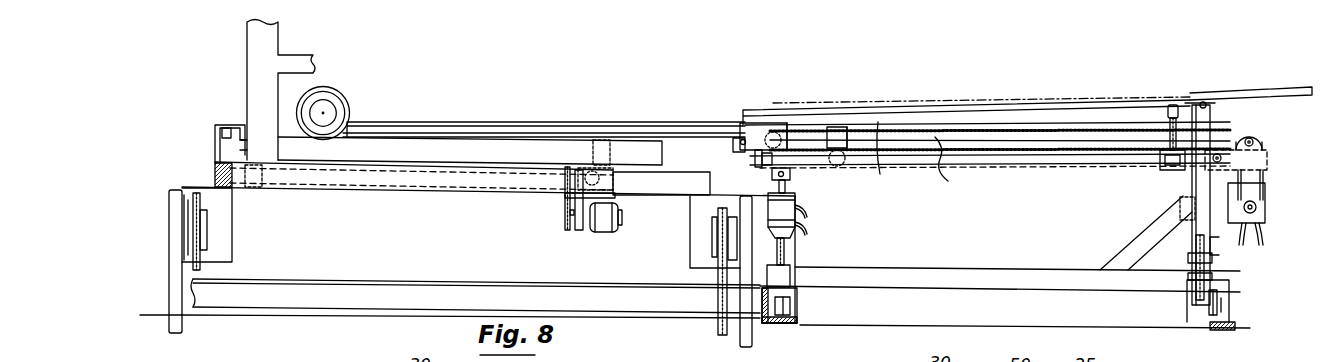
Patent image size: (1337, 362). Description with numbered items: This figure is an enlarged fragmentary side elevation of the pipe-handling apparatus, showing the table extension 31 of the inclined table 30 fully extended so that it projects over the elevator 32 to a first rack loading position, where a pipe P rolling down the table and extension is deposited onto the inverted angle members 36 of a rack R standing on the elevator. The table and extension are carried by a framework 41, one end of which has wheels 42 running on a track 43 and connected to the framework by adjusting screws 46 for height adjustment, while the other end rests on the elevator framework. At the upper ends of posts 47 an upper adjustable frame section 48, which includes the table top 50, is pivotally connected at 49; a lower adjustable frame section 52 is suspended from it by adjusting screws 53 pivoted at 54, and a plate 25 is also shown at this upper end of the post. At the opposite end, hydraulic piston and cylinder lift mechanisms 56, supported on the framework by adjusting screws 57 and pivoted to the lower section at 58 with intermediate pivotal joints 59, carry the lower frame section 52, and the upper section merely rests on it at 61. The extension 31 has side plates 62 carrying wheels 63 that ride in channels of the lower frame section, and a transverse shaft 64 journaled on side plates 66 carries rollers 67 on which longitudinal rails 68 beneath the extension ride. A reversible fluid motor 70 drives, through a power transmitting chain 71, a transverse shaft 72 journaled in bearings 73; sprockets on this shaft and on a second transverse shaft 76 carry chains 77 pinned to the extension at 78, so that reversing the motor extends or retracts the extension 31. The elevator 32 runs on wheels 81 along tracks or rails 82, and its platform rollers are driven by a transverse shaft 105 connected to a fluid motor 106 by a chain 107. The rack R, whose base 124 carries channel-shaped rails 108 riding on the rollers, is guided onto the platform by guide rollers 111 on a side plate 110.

The plate 25 is at (1267, 93).
The inclined table 30 is at (948, 101).
The table extension 31 is at (543, 123).
The elevator 32 is at (200, 178).
The inverted angle members 36 is at (295, 125).
The framework 41 is at (1017, 268).
The wheels 42 is at (1224, 298).
The track 43 is at (1230, 325).
The adjusting screws 46 is at (1207, 263).
The posts 47 is at (1197, 191).
The upper adjustable frame section 48 is at (882, 172).
The pivotal connection 49 is at (1210, 105).
The table top 50 is at (1028, 105).
The lower adjustable frame section 52 is at (990, 163).
The adjusting screws 53 is at (1163, 141).
The pivotal connection 54 is at (1172, 104).
The hydraulic piston and cylinder lift mechanisms 56 is at (804, 226).
The adjusting screws 57 is at (782, 262).
The pivotal connection 58 is at (782, 175).
The intermediate pivotal joints 59 is at (786, 242).
The resting point 61 is at (766, 167).
The side plates 62 is at (850, 142).
The wheels 63 is at (852, 170).
The transverse shaft 64 is at (753, 155).
The side plates 66 is at (760, 132).
The rollers 67 is at (733, 150).
The longitudinal rails 68 is at (487, 130).
The reversible fluid motor 70 is at (1263, 210).
The power transmitting chain 71 is at (1262, 178).
The transverse shaft 72 is at (1263, 140).
The bearings 73 is at (1247, 148).
The transverse shaft 76 is at (787, 123).
The chains 77 is at (1276, 114).
The chain pin connection 78 is at (840, 127).
The wheels 81 is at (787, 328).
The tracks or rails 82 is at (795, 317).
The transverse shaft 105 is at (362, 181).
The fluid motor 106 is at (612, 232).
The chain 107 is at (564, 206).
The channel-shaped rails 108 is at (248, 148).
The side plate 110 is at (213, 147).
The guide rollers 111 is at (242, 128).
The base 124 is at (407, 147).
The rack R is at (286, 47).
The pipe P is at (350, 95).